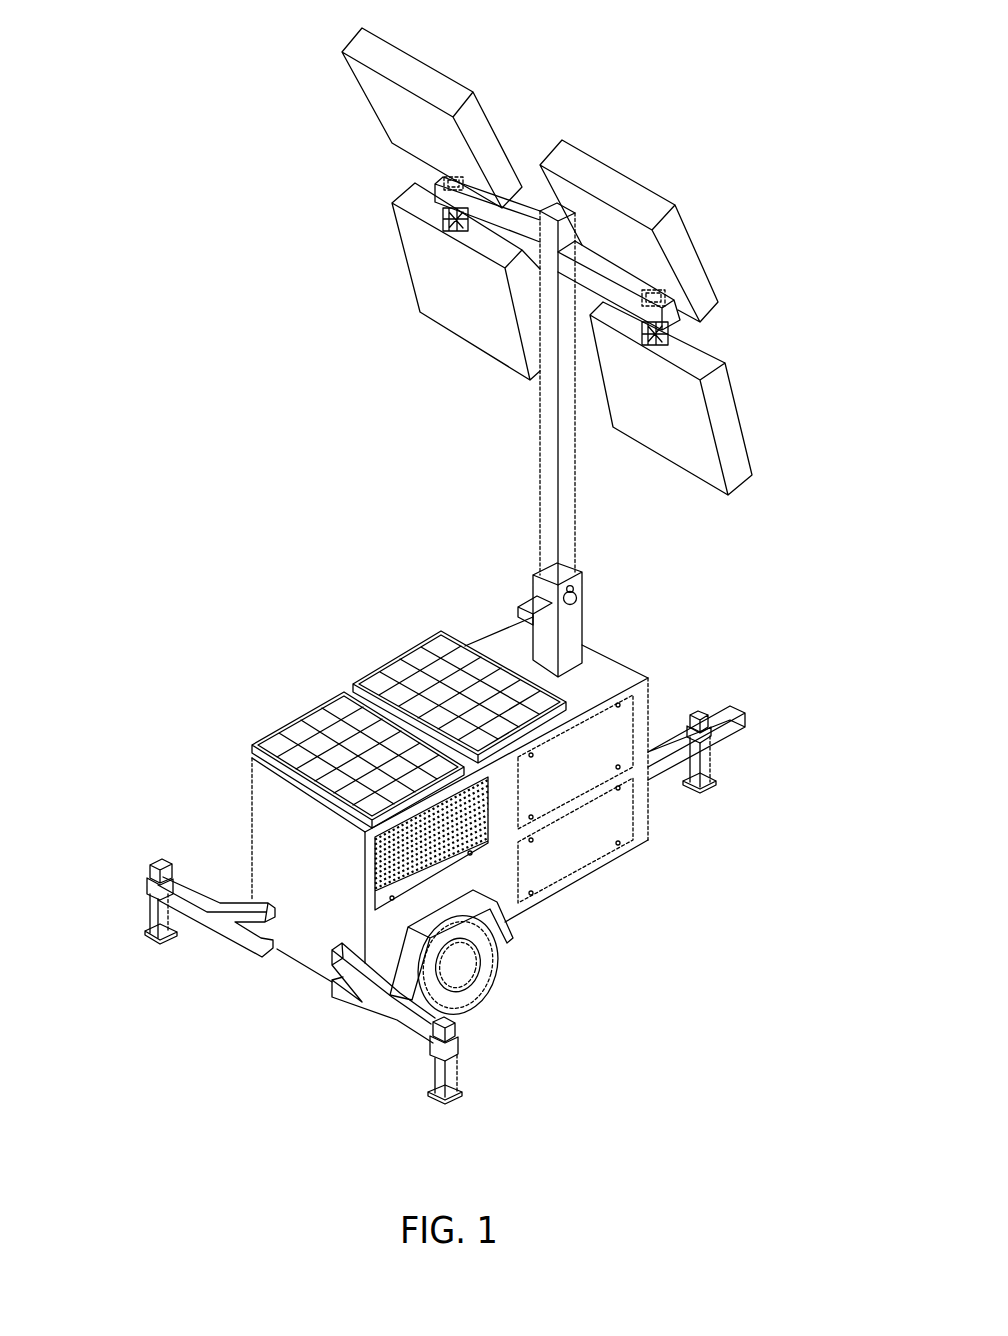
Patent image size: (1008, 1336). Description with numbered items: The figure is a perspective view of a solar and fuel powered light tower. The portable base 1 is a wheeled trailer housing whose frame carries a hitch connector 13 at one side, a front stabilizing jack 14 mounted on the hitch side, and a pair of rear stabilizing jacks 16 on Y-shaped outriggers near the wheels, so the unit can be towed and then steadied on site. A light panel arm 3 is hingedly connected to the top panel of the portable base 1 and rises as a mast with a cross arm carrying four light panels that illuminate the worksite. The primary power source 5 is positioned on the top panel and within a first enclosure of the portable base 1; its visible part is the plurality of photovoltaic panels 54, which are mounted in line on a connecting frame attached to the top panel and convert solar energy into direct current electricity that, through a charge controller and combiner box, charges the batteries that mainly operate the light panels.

The portable base 1 is at (618, 652).
The light panel arm 3 is at (508, 423).
The primary power source 5 is at (409, 701).
The plurality of photovoltaic panels 54 is at (438, 630).
The hitch connector 13 is at (745, 711).
The front stabilizing jack 14 is at (708, 767).
The pair of rear stabilizing jacks 16 is at (162, 858).